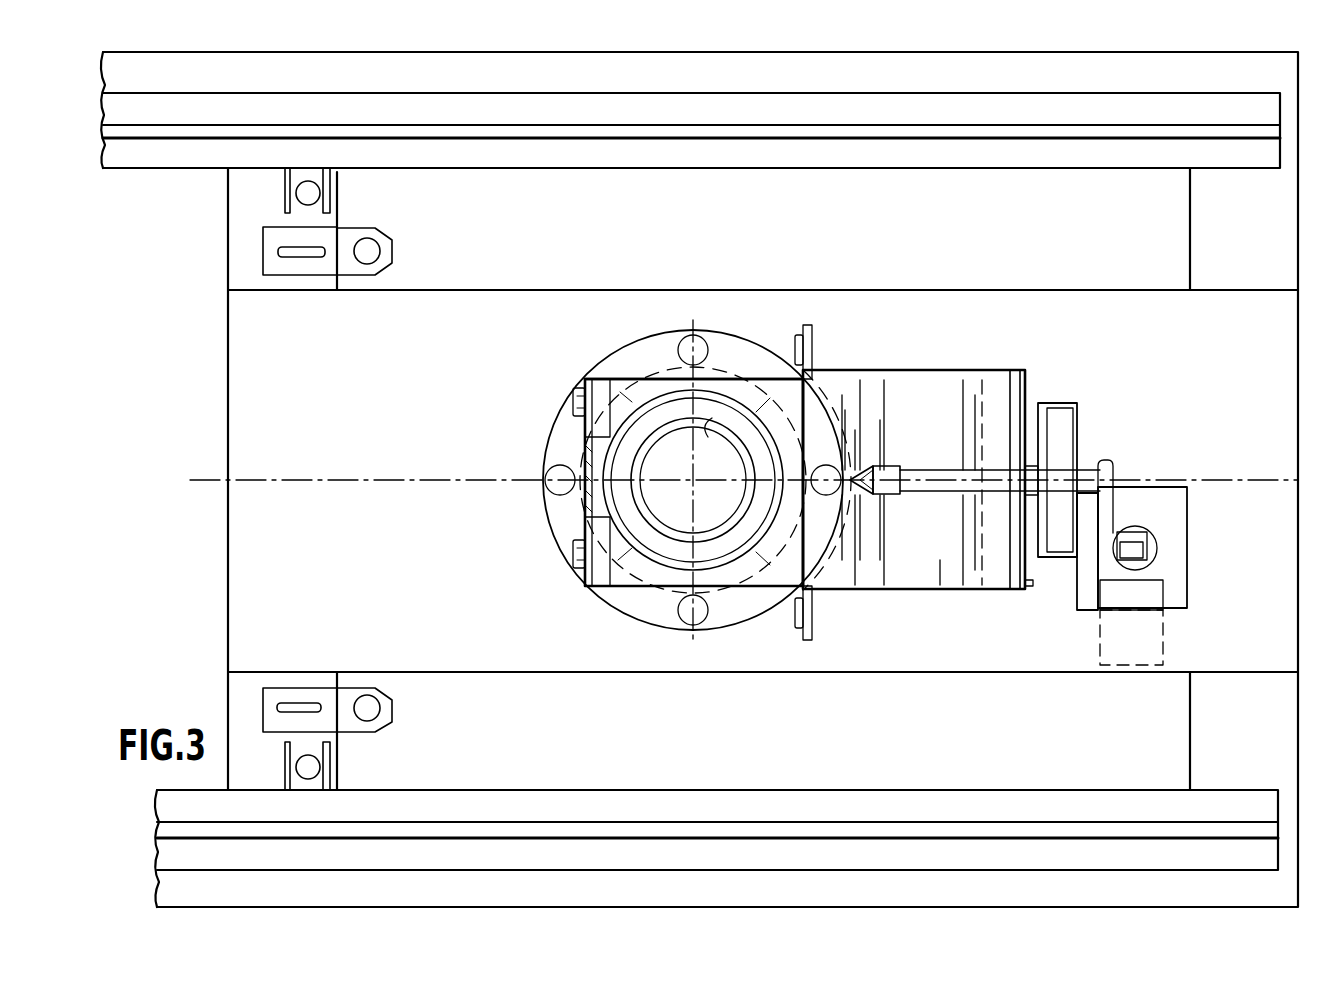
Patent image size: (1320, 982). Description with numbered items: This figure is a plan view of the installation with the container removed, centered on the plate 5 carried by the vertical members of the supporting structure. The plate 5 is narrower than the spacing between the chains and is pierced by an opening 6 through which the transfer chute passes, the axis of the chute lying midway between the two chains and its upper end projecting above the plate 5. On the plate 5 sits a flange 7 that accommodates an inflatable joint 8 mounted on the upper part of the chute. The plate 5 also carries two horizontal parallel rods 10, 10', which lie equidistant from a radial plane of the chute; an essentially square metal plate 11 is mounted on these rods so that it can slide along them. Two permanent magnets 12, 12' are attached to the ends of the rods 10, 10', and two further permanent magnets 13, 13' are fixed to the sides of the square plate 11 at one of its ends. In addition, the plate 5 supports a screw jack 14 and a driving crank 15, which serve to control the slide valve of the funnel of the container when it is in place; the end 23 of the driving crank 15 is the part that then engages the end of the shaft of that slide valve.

The plate 5 is at (1027, 645).
The opening 6 is at (718, 437).
The flange 7 is at (663, 567).
The inflatable joint 8 is at (717, 548).
The horizontal parallel rod 10 is at (693, 497).
The horizontal parallel rod 10' is at (682, 342).
The square metal plate 11 is at (945, 407).
The permanent magnet 12 is at (546, 569).
The permanent magnet 12' is at (541, 398).
The permanent magnet 13 is at (781, 626).
The permanent magnet 13' is at (828, 315).
The screw jack 14 is at (1167, 540).
The driving crank 15 is at (1110, 498).
The end of driving crank 23 is at (870, 467).